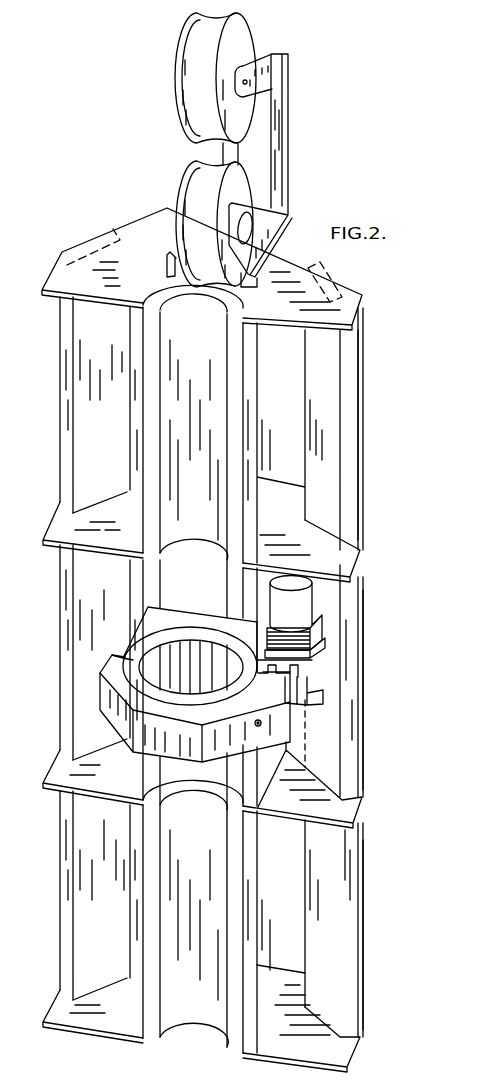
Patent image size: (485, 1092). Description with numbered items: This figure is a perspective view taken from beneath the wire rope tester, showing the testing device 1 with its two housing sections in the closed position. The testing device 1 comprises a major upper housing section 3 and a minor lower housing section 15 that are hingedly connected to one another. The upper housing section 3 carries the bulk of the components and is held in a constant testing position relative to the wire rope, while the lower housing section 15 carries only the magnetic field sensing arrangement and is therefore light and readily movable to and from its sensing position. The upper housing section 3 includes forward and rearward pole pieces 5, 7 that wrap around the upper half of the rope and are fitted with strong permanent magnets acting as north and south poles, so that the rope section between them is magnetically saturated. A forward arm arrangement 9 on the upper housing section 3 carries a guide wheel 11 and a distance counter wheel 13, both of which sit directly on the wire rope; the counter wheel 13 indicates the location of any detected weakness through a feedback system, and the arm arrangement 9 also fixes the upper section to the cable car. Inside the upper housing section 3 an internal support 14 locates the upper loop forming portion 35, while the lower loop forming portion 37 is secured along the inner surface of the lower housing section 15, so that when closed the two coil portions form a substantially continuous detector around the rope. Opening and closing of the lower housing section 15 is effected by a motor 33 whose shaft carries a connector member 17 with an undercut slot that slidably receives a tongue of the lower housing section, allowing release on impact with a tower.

The testing device 1 is at (408, 782).
The upper housing section 3 is at (352, 724).
The forward pole piece 5 is at (352, 420).
The rearward pole piece 7 is at (355, 940).
The forward arm arrangement 9 is at (283, 179).
The guide wheel 11 is at (192, 183).
The distance counter wheel 13 is at (180, 78).
The internal support 14 is at (171, 607).
The lower housing section 15 is at (153, 742).
The connector member 17 is at (308, 672).
The motor 33 is at (325, 622).
The loop forming portion 35 is at (215, 627).
The loop forming portion 37 is at (127, 668).